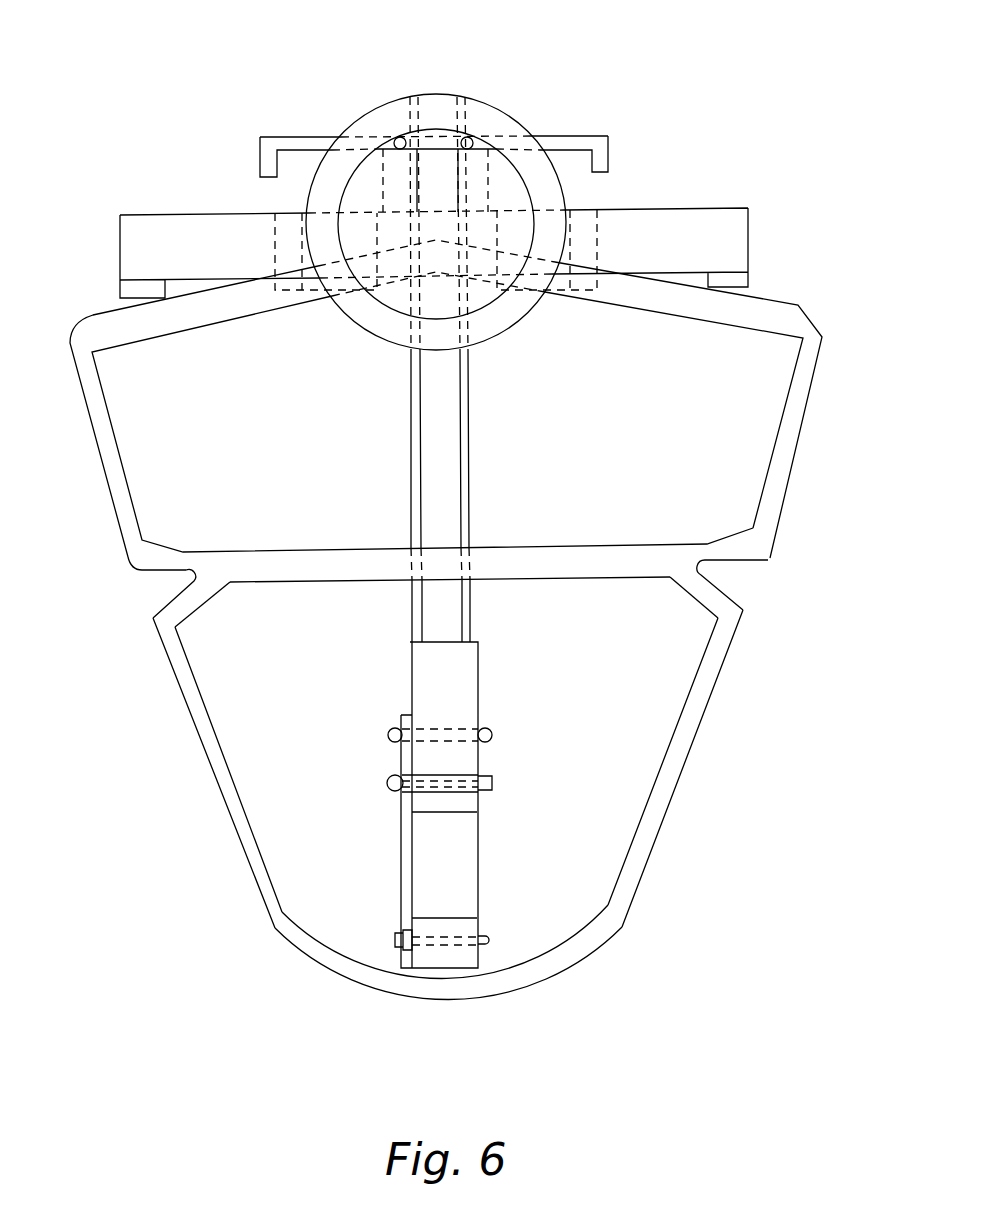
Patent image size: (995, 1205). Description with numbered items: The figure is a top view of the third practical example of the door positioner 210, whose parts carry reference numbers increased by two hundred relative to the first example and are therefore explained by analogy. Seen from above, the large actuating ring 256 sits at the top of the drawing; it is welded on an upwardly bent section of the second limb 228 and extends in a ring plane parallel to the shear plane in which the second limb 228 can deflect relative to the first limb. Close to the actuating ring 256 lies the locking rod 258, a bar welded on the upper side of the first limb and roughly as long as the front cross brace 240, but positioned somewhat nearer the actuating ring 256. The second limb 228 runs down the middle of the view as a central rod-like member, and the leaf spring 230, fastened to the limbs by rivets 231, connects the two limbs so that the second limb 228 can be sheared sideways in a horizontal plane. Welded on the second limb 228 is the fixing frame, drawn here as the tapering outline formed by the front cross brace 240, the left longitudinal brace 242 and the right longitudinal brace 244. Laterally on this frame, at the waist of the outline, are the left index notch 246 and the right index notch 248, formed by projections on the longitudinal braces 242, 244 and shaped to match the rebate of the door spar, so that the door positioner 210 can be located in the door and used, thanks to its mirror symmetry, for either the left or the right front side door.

The door positioner 210 is at (680, 995).
The second limb 228 is at (445, 442).
The leaf spring 230 is at (412, 850).
The rivets 231 is at (446, 943).
The front cross brace 240 is at (768, 313).
The left longitudinal brace 242 is at (245, 823).
The right longitudinal brace 244 is at (648, 823).
The left index notch 246 is at (178, 577).
The right index notch 248 is at (730, 580).
The actuating ring 256 is at (500, 127).
The locking rod 258 is at (703, 220).